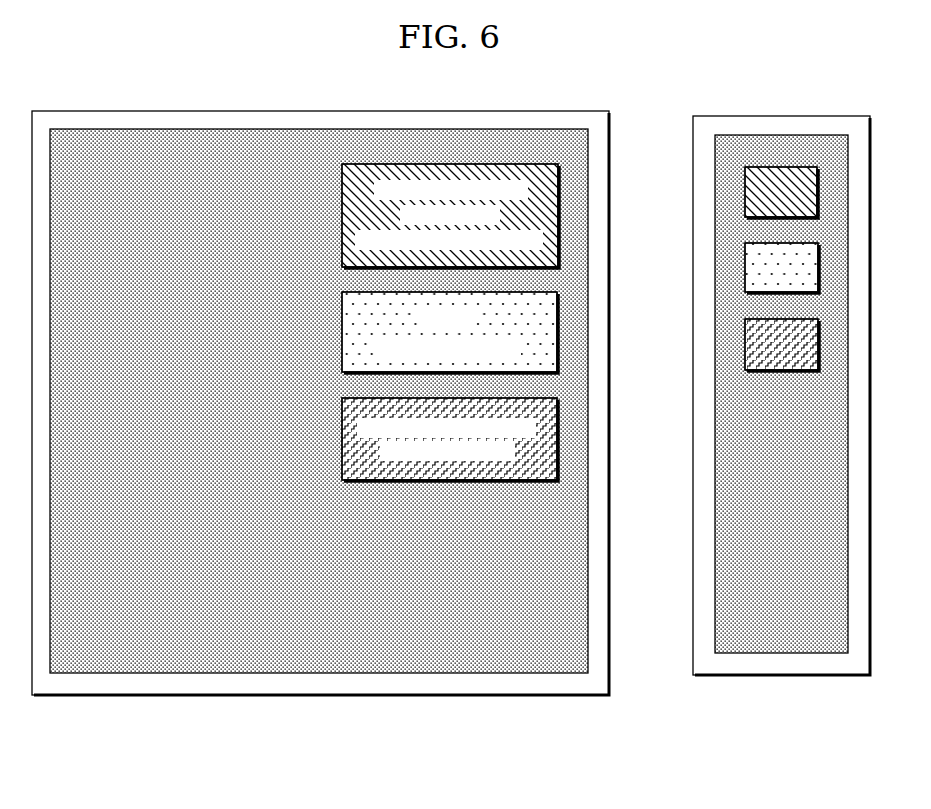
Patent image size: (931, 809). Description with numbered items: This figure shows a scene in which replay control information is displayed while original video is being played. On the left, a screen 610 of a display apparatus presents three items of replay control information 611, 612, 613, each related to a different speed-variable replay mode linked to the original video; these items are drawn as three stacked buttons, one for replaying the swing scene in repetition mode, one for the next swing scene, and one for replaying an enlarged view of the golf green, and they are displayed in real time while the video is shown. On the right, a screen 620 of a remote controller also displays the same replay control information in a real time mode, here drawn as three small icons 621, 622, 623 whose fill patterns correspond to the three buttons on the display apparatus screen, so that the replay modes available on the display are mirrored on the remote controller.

The screen of a display apparatus 610 is at (320, 111).
The replay control information 611 is at (342, 213).
The replay control information 612 is at (342, 331).
The replay control information 613 is at (342, 437).
The screen of a remote controller 620 is at (782, 116).
The first icon 621 is at (745, 190).
The second icon 622 is at (745, 268).
The third icon 623 is at (745, 345).